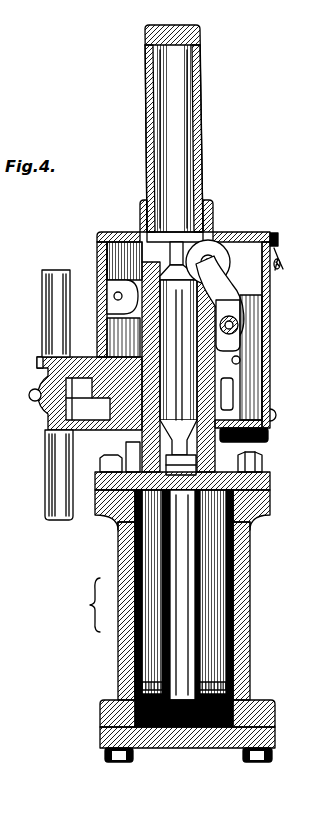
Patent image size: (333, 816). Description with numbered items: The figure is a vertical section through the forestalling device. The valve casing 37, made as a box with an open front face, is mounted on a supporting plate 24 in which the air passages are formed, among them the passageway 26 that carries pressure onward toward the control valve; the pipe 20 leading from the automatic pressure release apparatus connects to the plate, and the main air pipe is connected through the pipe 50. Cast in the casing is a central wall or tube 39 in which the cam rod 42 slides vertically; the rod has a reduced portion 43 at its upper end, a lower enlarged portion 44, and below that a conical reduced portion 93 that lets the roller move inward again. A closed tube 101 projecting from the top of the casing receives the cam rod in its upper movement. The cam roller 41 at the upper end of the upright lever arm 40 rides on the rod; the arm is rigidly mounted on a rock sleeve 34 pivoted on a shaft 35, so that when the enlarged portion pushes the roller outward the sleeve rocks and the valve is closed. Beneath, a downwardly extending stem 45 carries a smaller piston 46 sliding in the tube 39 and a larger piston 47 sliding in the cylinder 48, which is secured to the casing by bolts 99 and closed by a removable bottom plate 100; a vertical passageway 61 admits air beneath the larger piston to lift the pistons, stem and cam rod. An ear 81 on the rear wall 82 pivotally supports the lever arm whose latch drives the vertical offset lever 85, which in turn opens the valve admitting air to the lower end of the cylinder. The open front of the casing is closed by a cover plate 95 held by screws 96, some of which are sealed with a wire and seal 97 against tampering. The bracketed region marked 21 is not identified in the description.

The closed tube 101 is at (205, 127).
The valve casing 37 is at (107, 236).
The rear wall 82 is at (97, 266).
The ear 81 is at (107, 292).
The central wall or tube 39 is at (123, 337).
The reduced portion 43 is at (170, 255).
The cam rod 42 is at (165, 278).
The enlarged portion 44 is at (178, 367).
The conical reduced portion 93 is at (175, 355).
The stem 45 is at (181, 466).
The cam roller 41 is at (216, 252).
The upright lever arm 40 is at (227, 298).
The shaft 35 is at (246, 341).
The rock sleeve 34 is at (240, 327).
The cover plate 95 is at (270, 301).
The vertical offset lever 85 is at (236, 394).
The screws 96 is at (279, 237).
The wire and seal 97 is at (281, 262).
The supporting plate 24 is at (40, 362).
The passageway 26 is at (26, 410).
The pipe 50 is at (50, 299).
The pipe 20 is at (52, 483).
The bolts 99 is at (264, 461).
The cylinder 48 is at (248, 581).
The larger piston 47 is at (252, 666).
The smaller piston 46 is at (194, 498).
The cylinder assembly 21 is at (83, 605).
The vertical passageway 61 is at (268, 702).
The bottom plate 100 is at (100, 740).